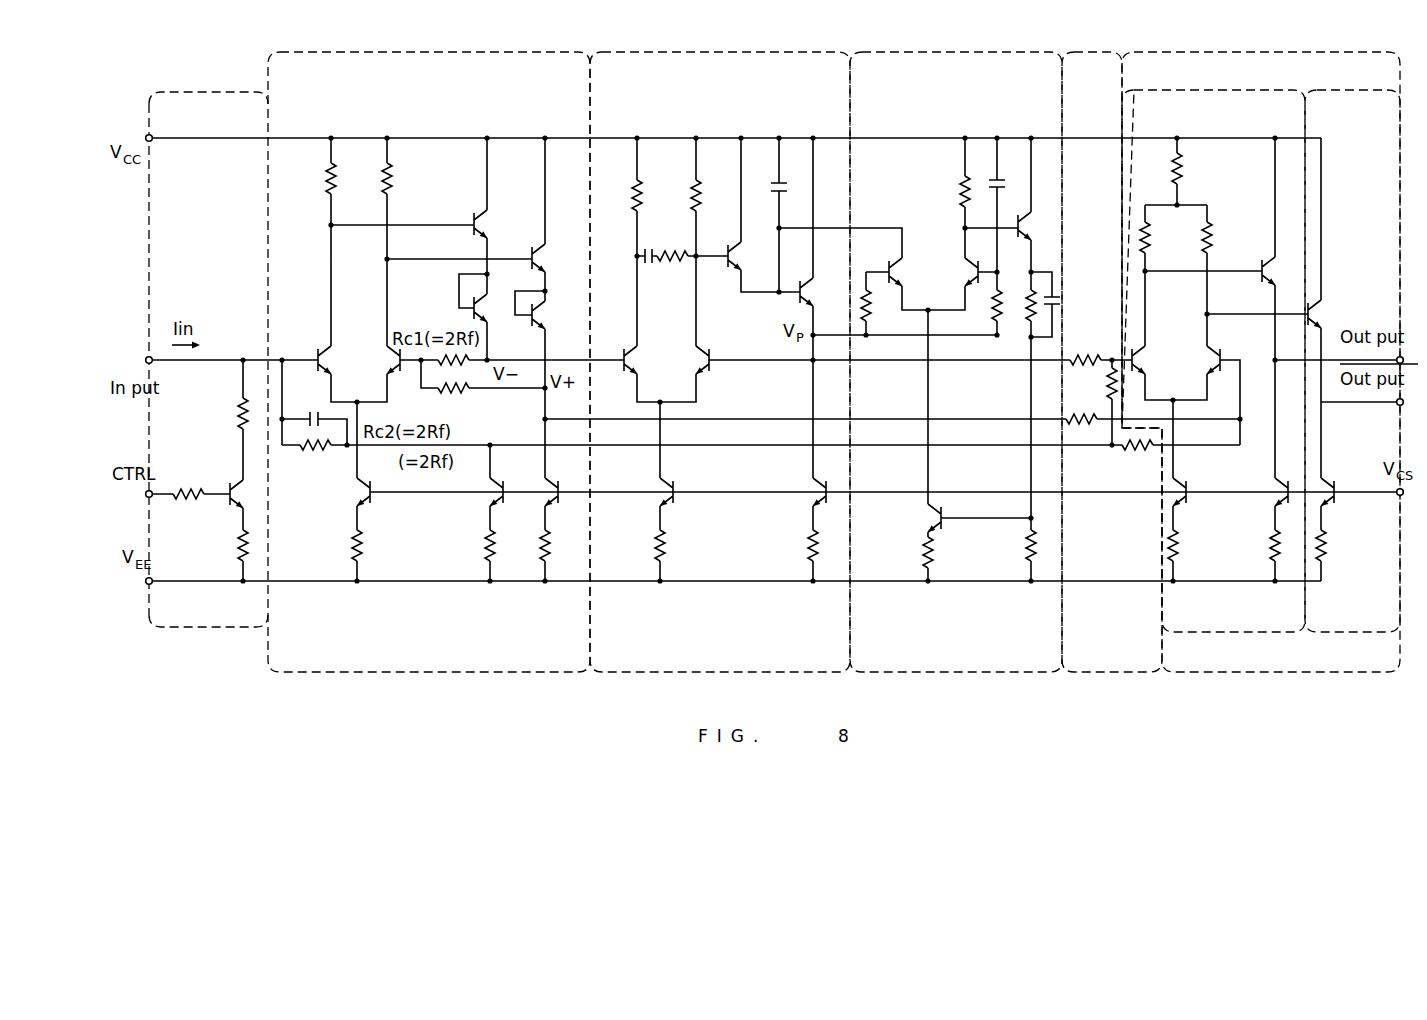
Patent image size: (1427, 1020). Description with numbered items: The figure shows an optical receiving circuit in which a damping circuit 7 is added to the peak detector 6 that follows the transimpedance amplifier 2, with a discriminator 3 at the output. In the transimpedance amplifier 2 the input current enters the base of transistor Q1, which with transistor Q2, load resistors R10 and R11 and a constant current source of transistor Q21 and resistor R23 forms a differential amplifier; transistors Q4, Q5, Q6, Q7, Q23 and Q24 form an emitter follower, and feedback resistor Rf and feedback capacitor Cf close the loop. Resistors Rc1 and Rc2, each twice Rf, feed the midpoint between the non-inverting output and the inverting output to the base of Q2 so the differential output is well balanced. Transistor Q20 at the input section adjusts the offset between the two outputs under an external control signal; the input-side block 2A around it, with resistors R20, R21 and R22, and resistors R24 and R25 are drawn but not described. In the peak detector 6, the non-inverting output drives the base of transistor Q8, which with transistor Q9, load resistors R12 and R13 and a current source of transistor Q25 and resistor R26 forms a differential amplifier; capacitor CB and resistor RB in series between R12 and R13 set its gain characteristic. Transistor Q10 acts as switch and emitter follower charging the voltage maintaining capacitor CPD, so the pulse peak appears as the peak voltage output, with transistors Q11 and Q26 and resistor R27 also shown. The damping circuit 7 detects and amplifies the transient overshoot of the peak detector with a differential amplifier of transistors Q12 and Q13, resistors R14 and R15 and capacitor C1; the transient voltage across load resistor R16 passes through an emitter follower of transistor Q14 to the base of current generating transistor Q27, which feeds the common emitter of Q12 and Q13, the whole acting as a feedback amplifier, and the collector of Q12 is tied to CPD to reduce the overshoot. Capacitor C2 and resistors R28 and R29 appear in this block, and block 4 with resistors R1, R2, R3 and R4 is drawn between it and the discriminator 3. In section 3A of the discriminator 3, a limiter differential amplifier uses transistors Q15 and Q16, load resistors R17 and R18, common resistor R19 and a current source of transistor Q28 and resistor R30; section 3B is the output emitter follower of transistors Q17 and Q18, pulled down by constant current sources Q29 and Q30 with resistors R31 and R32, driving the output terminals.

The control circuit 2A is at (198, 92).
The transimpedance amplifier 2 is at (436, 52).
The peak detector 6 is at (737, 52).
The damping circuit 7 is at (998, 52).
The feedback resistor network 4 is at (1085, 52).
The discriminator 3 is at (1240, 52).
The output differential stage 3A is at (1151, 90).
The output buffer 3B is at (1340, 90).
The transistor Q1 is at (323, 363).
The transistor Q2 is at (394, 368).
The transistor Q4 is at (485, 224).
The transistor Q5 is at (486, 311).
The transistor Q6 is at (540, 258).
The transistor Q7 is at (540, 319).
The transistor Q8 is at (630, 363).
The transistor Q9 is at (712, 372).
The transistor Q10 is at (733, 268).
The transistor Q11 is at (806, 292).
The transistor Q12 is at (898, 268).
The transistor Q13 is at (968, 269).
The transistor Q14 is at (1036, 229).
The transistor Q15 is at (1142, 354).
The transistor Q16 is at (1222, 366).
The transistor Q17 is at (1264, 288).
The transistor Q18 is at (1318, 319).
The transistor Q20 is at (246, 496).
The transistor Q21 is at (362, 495).
The transistor Q23 is at (483, 497).
The transistor Q24 is at (540, 487).
The transistor Q25 is at (660, 497).
The transistor Q26 is at (810, 496).
The current generating transistor Q27 is at (937, 518).
The transistor Q28 is at (1172, 497).
The transistor Q29 is at (1274, 497).
The transistor Q30 is at (1333, 516).
The resistor R1 is at (1079, 355).
The resistor R2 is at (1107, 386).
The resistor R3 is at (1073, 413).
The resistor R4 is at (1140, 452).
The load resistor R10 is at (326, 185).
The load resistor R11 is at (395, 185).
The load resistor R12 is at (632, 206).
The load resistor R13 is at (702, 210).
The resistor R14 is at (872, 300).
The resistor R15 is at (988, 302).
The load resistor R16 is at (958, 190).
The load resistor R17 is at (1168, 238).
The load resistor R18 is at (1213, 246).
The common resistor R19 is at (1184, 175).
The resistor R20 is at (204, 485).
The resistor R21 is at (238, 415).
The resistor R22 is at (250, 548).
The resistor R23 is at (384, 546).
The resistor R24 is at (484, 553).
The resistor R25 is at (550, 548).
The resistor R26 is at (667, 548).
The resistor R27 is at (806, 548).
The resistor R28 is at (942, 557).
The resistor R29 is at (1052, 549).
The resistor R30 is at (1182, 548).
The resistor R31 is at (1268, 556).
The resistor R32 is at (1331, 548).
The resistor Rc1 is at (452, 357).
The resistor Rc2 is at (452, 394).
The feedback resistor Rf is at (311, 452).
The resistor RB is at (674, 265).
The feedback capacitor Cf is at (311, 413).
The capacitor CB is at (647, 251).
The voltage maintaining capacitor CPD is at (791, 190).
The capacitor C1 is at (1003, 182).
The capacitor C2 is at (1061, 301).